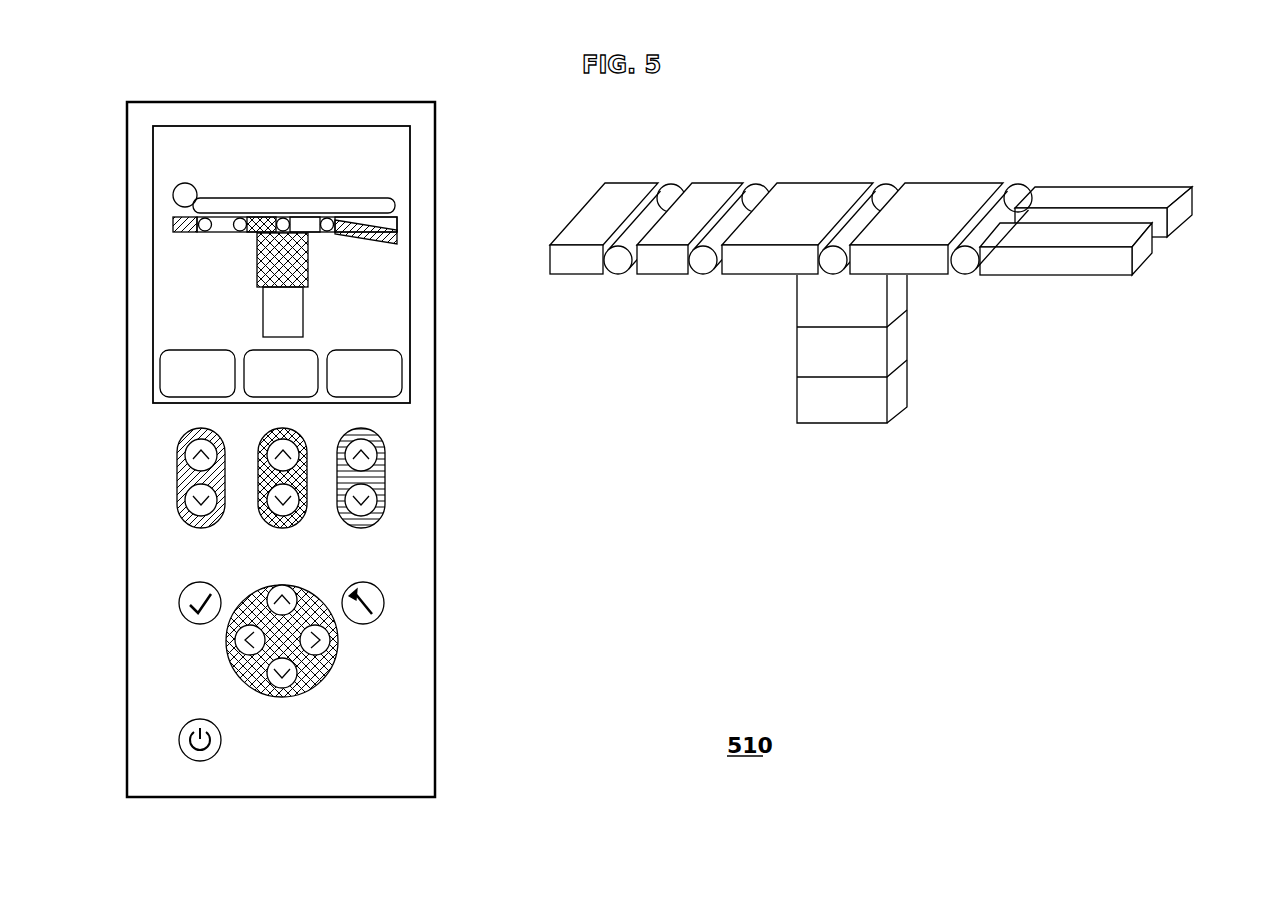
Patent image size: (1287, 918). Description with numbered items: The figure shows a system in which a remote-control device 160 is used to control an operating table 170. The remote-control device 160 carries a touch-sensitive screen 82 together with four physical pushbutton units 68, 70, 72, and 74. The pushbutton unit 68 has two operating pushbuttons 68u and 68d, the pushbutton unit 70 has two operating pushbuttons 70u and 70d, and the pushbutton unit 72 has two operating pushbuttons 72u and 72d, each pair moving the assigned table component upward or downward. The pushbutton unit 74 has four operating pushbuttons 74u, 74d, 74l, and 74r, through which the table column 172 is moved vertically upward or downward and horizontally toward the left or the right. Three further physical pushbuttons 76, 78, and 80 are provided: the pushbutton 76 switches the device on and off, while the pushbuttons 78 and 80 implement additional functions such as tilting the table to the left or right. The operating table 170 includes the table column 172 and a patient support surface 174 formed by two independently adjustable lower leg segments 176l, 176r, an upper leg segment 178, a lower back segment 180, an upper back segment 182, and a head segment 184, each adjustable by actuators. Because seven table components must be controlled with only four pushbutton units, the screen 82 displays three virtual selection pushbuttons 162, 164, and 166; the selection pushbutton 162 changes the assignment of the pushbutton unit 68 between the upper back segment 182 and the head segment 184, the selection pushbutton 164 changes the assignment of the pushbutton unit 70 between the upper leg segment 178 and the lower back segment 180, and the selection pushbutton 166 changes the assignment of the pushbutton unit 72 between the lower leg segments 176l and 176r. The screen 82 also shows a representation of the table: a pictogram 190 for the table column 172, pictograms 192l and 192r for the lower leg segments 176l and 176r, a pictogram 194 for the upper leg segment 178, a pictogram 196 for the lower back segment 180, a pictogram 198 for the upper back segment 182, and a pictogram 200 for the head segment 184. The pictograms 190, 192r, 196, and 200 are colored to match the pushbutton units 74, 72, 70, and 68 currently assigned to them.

The remote-control device 160 is at (292, 101).
The touch-sensitive screen 82 is at (376, 126).
The pictogram 190 is at (257, 277).
The pictogram 192l is at (375, 214).
The pictogram 192r is at (391, 245).
The pictogram 194 is at (302, 216).
The pictogram 196 is at (271, 216).
The pictogram 198 is at (222, 216).
The pictogram 200 is at (180, 232).
The selection pushbutton 162 is at (160, 365).
The selection pushbutton 164 is at (310, 350).
The selection pushbutton 166 is at (400, 365).
The pushbutton unit 68 is at (145, 477).
The operating pushbutton 68u is at (184, 458).
The operating pushbutton 68d is at (182, 494).
The pushbutton unit 70 is at (282, 479).
The operating pushbutton 70u is at (262, 464).
The operating pushbutton 70d is at (268, 493).
The pushbutton unit 72 is at (416, 477).
The operating pushbutton 72u is at (380, 458).
The operating pushbutton 72d is at (382, 494).
The pushbutton unit 74 is at (282, 652).
The operating pushbutton 74u is at (280, 588).
The operating pushbutton 74l is at (237, 631).
The operating pushbutton 74r is at (338, 643).
The operating pushbutton 74d is at (290, 694).
The operating pushbutton 76 is at (179, 741).
The operating pushbutton 78 is at (179, 604).
The operating pushbutton 80 is at (384, 604).
The operating table 170 is at (1025, 115).
The table column 172 is at (908, 340).
The patient support surface 174 is at (1175, 215).
The lower leg segment 176l is at (1108, 187).
The lower leg segment 176r is at (1140, 258).
The upper leg segment 178 is at (957, 184).
The lower back segment 180 is at (762, 278).
The upper back segment 182 is at (660, 278).
The head segment 184 is at (570, 278).